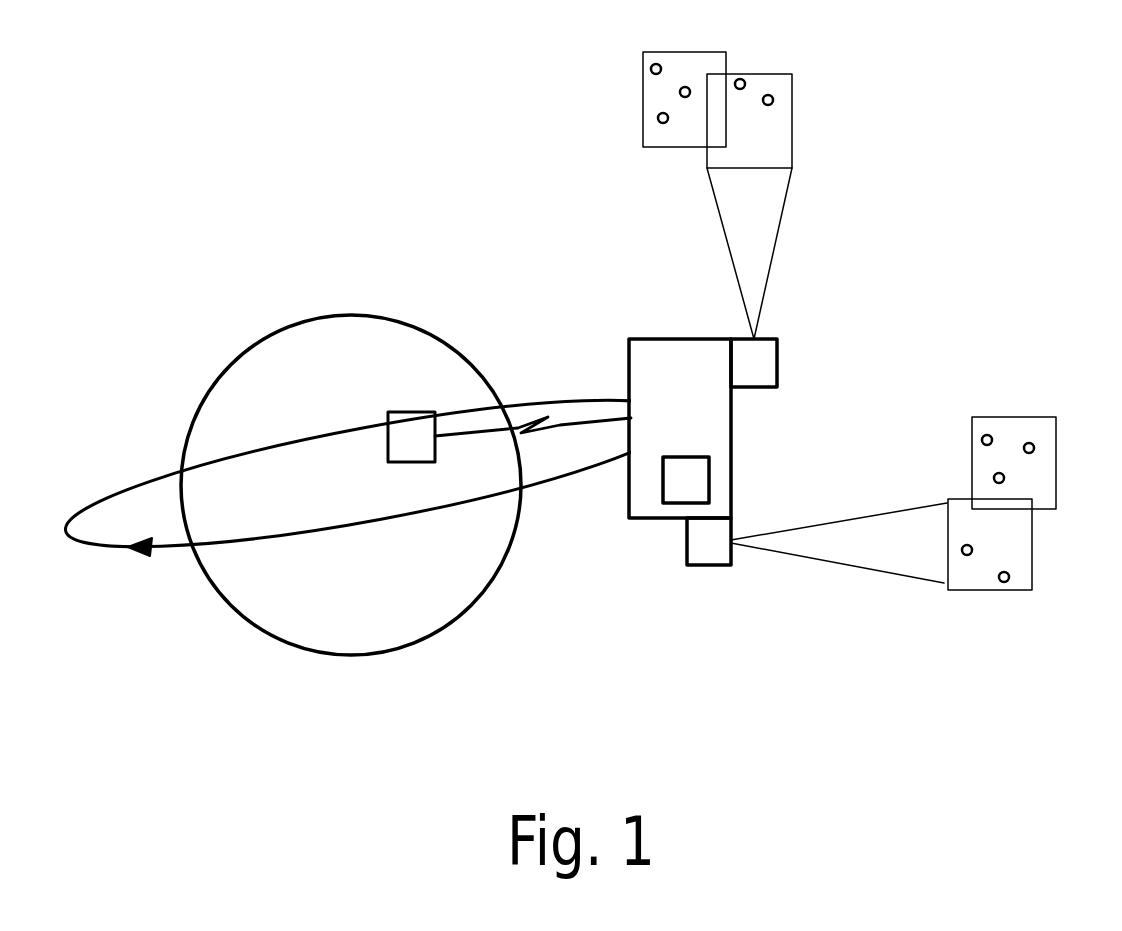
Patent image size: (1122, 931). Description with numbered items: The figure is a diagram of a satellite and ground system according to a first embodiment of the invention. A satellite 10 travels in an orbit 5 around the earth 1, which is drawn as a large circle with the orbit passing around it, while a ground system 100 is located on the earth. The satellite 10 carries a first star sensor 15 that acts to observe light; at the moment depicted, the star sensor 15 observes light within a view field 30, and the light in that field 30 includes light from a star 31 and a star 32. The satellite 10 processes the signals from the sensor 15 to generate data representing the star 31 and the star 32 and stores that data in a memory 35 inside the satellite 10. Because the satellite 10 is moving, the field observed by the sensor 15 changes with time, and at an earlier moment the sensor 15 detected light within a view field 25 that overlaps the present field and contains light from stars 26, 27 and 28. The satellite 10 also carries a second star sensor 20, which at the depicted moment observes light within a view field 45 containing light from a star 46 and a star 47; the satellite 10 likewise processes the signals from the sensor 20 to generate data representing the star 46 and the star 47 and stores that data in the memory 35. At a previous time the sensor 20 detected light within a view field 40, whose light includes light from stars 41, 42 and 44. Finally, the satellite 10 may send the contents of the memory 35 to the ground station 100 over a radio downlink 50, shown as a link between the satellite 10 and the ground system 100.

The Earth 1 is at (203, 408).
The orbit 5 is at (150, 480).
The satellite 10 is at (680, 428).
The star sensor 15 is at (749, 277).
The star sensor 20 is at (817, 543).
The view field 25 is at (643, 92).
The star 26 is at (658, 63).
The star 27 is at (660, 122).
The star 28 is at (683, 87).
The view field 30 is at (793, 107).
The star 31 is at (770, 95).
The star 32 is at (743, 80).
The memory 35 is at (686, 480).
The view field 40 is at (1058, 481).
The star 41 is at (990, 434).
The star 42 is at (1035, 448).
The star 44 is at (993, 479).
The view field 45 is at (1034, 560).
The star 46 is at (967, 557).
The star 47 is at (1003, 584).
The radio downlink 50 is at (588, 427).
The ground system 100 is at (411, 437).